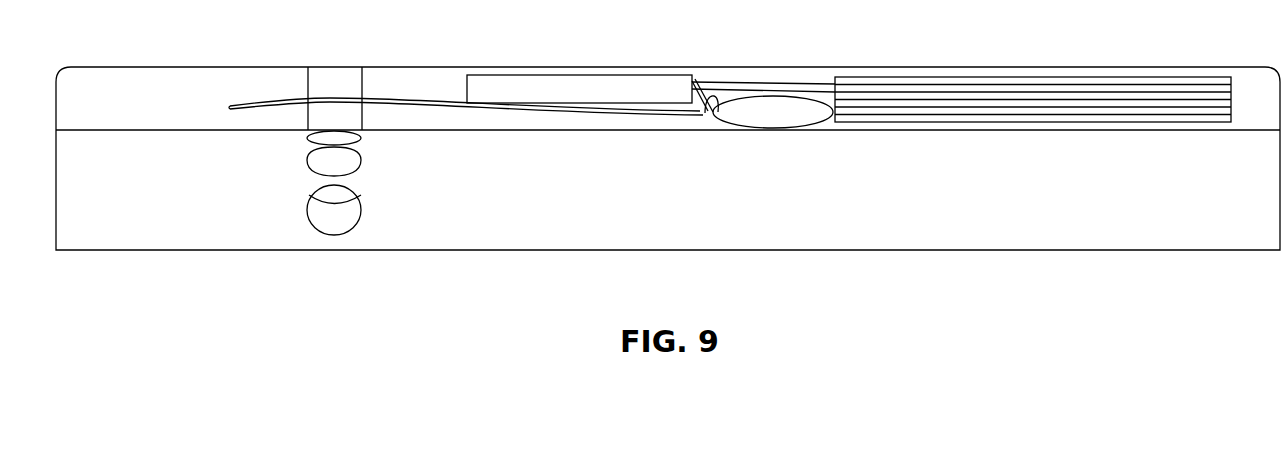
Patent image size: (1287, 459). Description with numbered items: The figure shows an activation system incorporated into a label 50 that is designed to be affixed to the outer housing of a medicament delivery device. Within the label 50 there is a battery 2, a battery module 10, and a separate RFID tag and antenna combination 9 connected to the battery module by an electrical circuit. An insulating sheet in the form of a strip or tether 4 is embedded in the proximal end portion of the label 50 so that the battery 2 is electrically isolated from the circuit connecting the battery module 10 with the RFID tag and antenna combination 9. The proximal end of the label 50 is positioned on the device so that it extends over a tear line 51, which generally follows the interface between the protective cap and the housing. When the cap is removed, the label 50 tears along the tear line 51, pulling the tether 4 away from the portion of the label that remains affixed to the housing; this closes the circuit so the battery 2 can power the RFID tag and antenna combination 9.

The battery 2 is at (772, 103).
The insulating tether 4 is at (408, 103).
The RFID tag and antenna combination 9 is at (992, 75).
The battery 10 is at (582, 82).
The label 50 is at (676, 200).
The tear line 51 is at (341, 209).